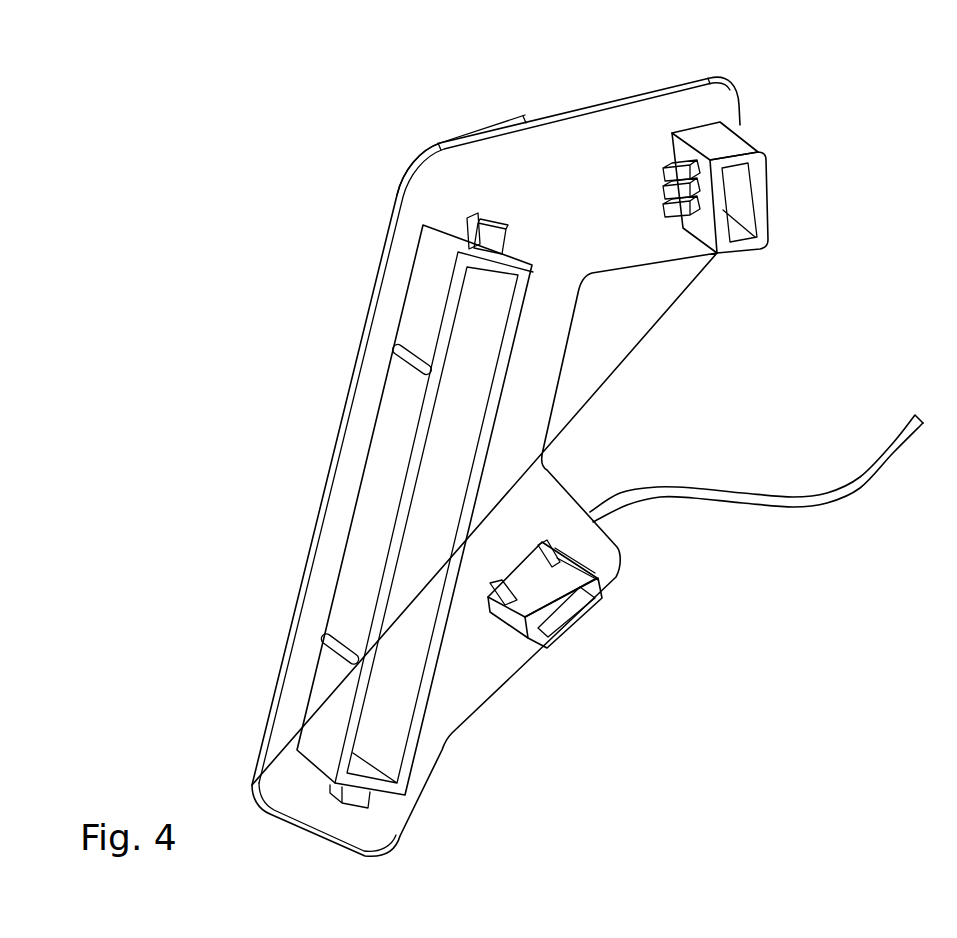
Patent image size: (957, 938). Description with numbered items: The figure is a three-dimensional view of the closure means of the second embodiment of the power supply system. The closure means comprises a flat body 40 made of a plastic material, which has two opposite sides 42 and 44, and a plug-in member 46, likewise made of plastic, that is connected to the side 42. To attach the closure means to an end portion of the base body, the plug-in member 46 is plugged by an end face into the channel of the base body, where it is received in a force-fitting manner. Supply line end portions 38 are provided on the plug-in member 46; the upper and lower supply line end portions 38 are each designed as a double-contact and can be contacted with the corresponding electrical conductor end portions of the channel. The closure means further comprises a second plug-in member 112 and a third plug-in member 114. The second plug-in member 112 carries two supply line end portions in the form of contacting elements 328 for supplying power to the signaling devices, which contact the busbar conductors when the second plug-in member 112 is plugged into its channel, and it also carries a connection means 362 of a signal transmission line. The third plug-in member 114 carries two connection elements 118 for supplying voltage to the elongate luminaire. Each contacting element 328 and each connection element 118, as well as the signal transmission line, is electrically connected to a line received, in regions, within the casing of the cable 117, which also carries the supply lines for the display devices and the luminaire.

The supply line end portion 38 is at (478, 220).
The flat body 40 is at (440, 177).
The side 42 is at (492, 143).
The side 44 is at (467, 131).
The plug-in member 46 is at (417, 298).
The second plug-in member 112 is at (737, 147).
The third plug-in member 114 is at (600, 573).
The cable 117 is at (787, 502).
The connection element 118 is at (493, 587).
The contacting element 328 is at (670, 185).
The connection means 362 is at (680, 217).